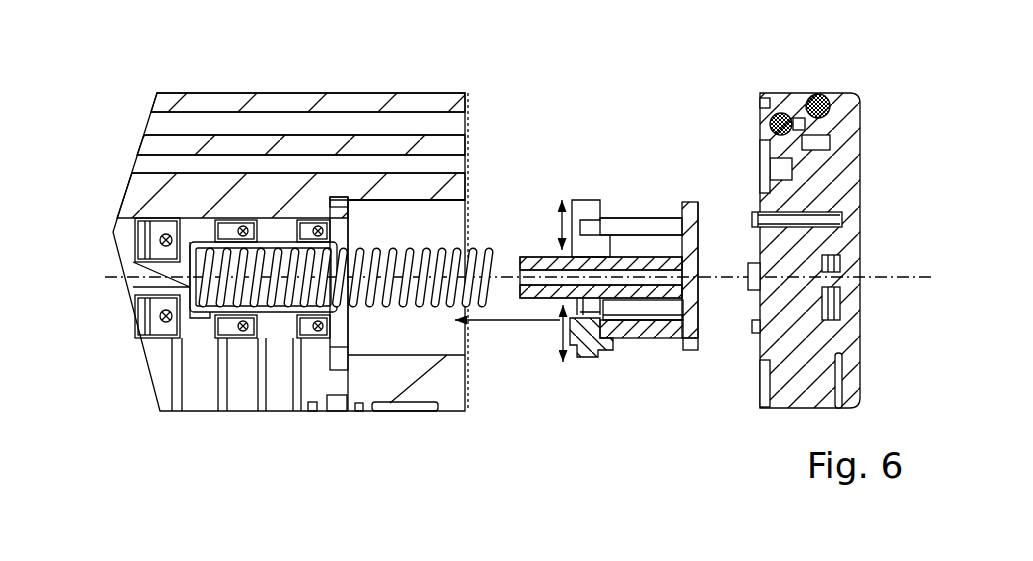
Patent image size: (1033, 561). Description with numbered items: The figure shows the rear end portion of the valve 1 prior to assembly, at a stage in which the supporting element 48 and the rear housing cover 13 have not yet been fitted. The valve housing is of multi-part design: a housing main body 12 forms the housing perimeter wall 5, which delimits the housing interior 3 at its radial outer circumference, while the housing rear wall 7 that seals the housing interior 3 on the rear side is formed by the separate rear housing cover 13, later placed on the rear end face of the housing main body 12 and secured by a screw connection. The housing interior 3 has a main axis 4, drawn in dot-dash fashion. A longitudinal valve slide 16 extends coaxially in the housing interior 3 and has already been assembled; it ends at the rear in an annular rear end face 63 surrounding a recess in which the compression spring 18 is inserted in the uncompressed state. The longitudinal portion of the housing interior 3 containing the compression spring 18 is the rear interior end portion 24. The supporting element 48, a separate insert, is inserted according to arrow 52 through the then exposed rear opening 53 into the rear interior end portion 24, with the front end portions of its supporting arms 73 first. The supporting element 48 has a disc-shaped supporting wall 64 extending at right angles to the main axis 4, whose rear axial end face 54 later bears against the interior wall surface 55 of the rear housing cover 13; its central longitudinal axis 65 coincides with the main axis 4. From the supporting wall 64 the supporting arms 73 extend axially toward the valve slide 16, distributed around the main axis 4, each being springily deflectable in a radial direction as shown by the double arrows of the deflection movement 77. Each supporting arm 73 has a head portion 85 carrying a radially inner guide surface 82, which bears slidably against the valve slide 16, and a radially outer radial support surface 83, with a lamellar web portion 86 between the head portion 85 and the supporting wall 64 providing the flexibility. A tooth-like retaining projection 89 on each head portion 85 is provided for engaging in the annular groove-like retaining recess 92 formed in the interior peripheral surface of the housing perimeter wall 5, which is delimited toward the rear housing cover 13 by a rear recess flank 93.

The valve 1 is at (108, 156).
The housing interior 3 is at (370, 213).
The main axis 4 is at (898, 276).
The housing perimeter wall 5 is at (255, 187).
The housing main body 12 is at (290, 218).
The housing rear wall 7 is at (836, 164).
The rear housing cover 13 is at (845, 250).
The valve slide 16 is at (133, 283).
The compression spring 18 is at (388, 305).
The rear interior end portion 24 is at (445, 340).
The supporting element 48 is at (646, 208).
The arrow 52 is at (500, 323).
The rear opening 53 is at (458, 212).
The axial end face 54 is at (702, 240).
The interior wall surface 55 is at (744, 296).
The annular rear end face 63 is at (350, 322).
The supporting wall 64 is at (692, 300).
The longitudinal axis 65 is at (650, 345).
The supporting arm 73 is at (620, 216).
The deflection movement 77 is at (560, 222).
The guide surface 82 is at (590, 246).
The radial support surface 83 is at (589, 200).
The head portion 85 is at (592, 347).
The web portion 86 is at (668, 222).
The retaining projection 89 is at (578, 358).
The retaining recess 92 is at (340, 357).
The rear recess flank 93 is at (343, 197).